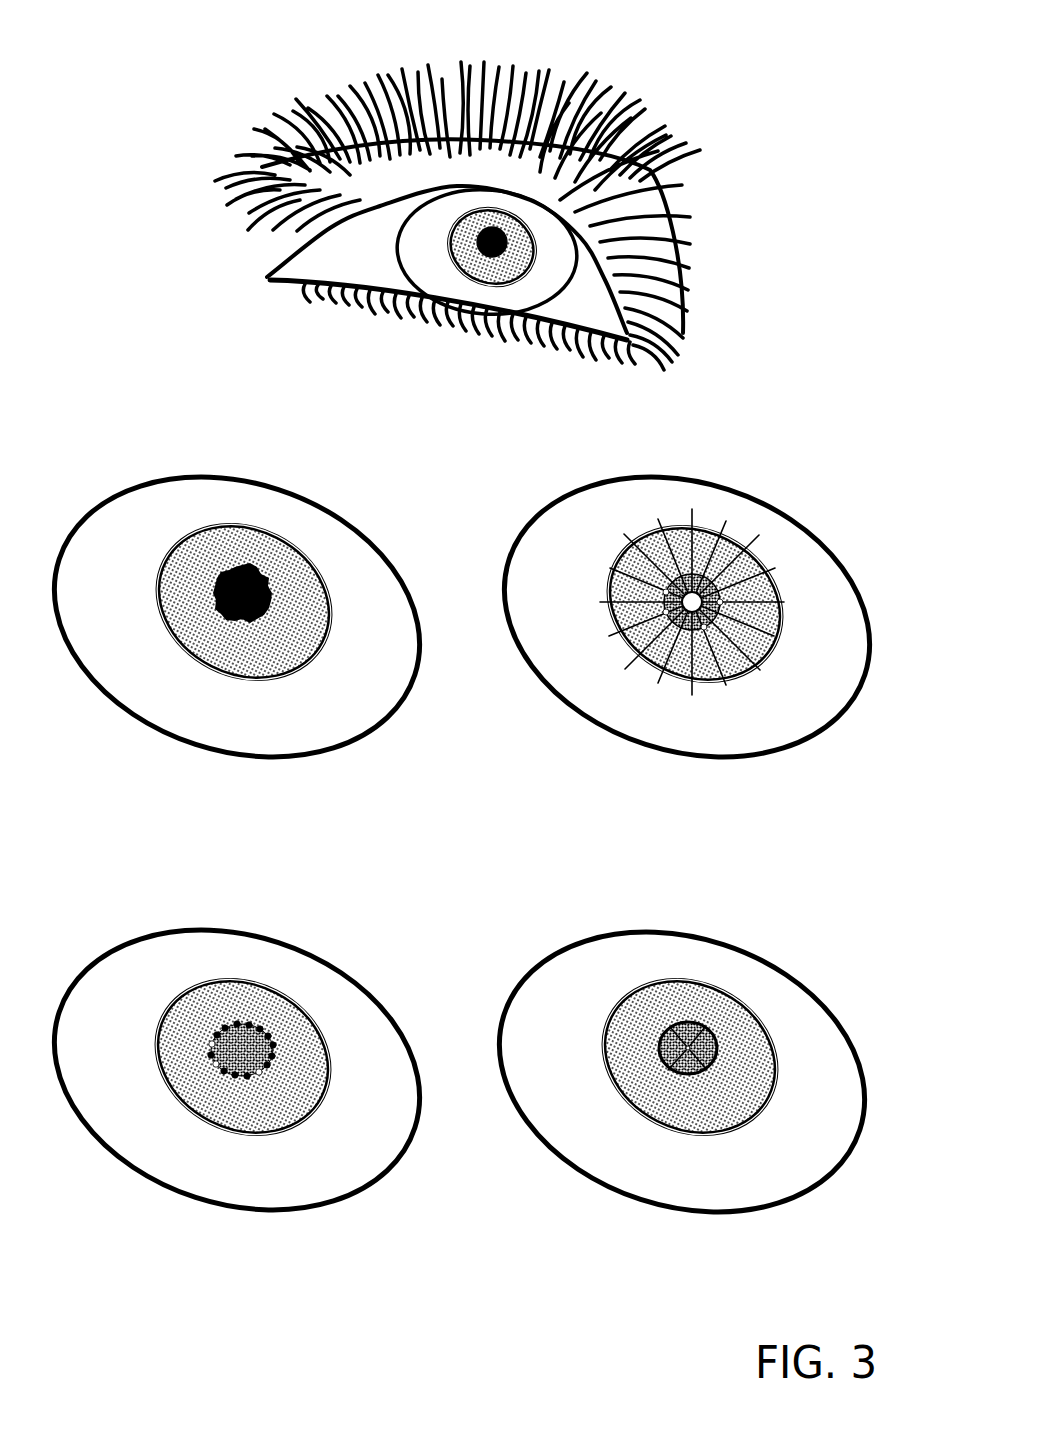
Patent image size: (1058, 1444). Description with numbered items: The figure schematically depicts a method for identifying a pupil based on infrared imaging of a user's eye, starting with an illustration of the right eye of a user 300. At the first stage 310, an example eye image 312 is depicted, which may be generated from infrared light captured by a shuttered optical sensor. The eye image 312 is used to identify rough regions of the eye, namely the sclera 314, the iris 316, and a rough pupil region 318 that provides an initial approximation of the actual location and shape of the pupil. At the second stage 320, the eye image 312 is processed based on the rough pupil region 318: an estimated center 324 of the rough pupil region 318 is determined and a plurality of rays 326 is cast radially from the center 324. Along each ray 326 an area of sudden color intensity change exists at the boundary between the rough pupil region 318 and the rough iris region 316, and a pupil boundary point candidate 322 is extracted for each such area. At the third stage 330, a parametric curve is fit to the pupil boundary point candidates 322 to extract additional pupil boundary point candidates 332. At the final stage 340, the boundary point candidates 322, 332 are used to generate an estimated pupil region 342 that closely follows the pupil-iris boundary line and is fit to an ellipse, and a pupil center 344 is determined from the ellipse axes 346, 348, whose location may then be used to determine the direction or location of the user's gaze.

The right eye of a user 300 is at (612, 37).
The example eye image stage 310 is at (230, 463).
The eye image 312 is at (340, 527).
The sclera 314 is at (311, 707).
The iris 316 is at (244, 602).
The rough pupil region 318 is at (223, 560).
The processed eye image stage 320 is at (683, 463).
The pupil boundary point candidates 322 is at (666, 613).
The estimated center 324 is at (740, 568).
The rays 326 is at (618, 540).
The further processed eye image stage 330 is at (230, 913).
The additional pupil boundary point candidates 332 is at (247, 1010).
The estimated pupil region stage 340 is at (690, 903).
The estimated pupil region 342 is at (688, 1048).
The pupil center 344 is at (688, 1048).
The ellipse axis 346 is at (688, 1048).
The ellipse axis 348 is at (688, 1048).